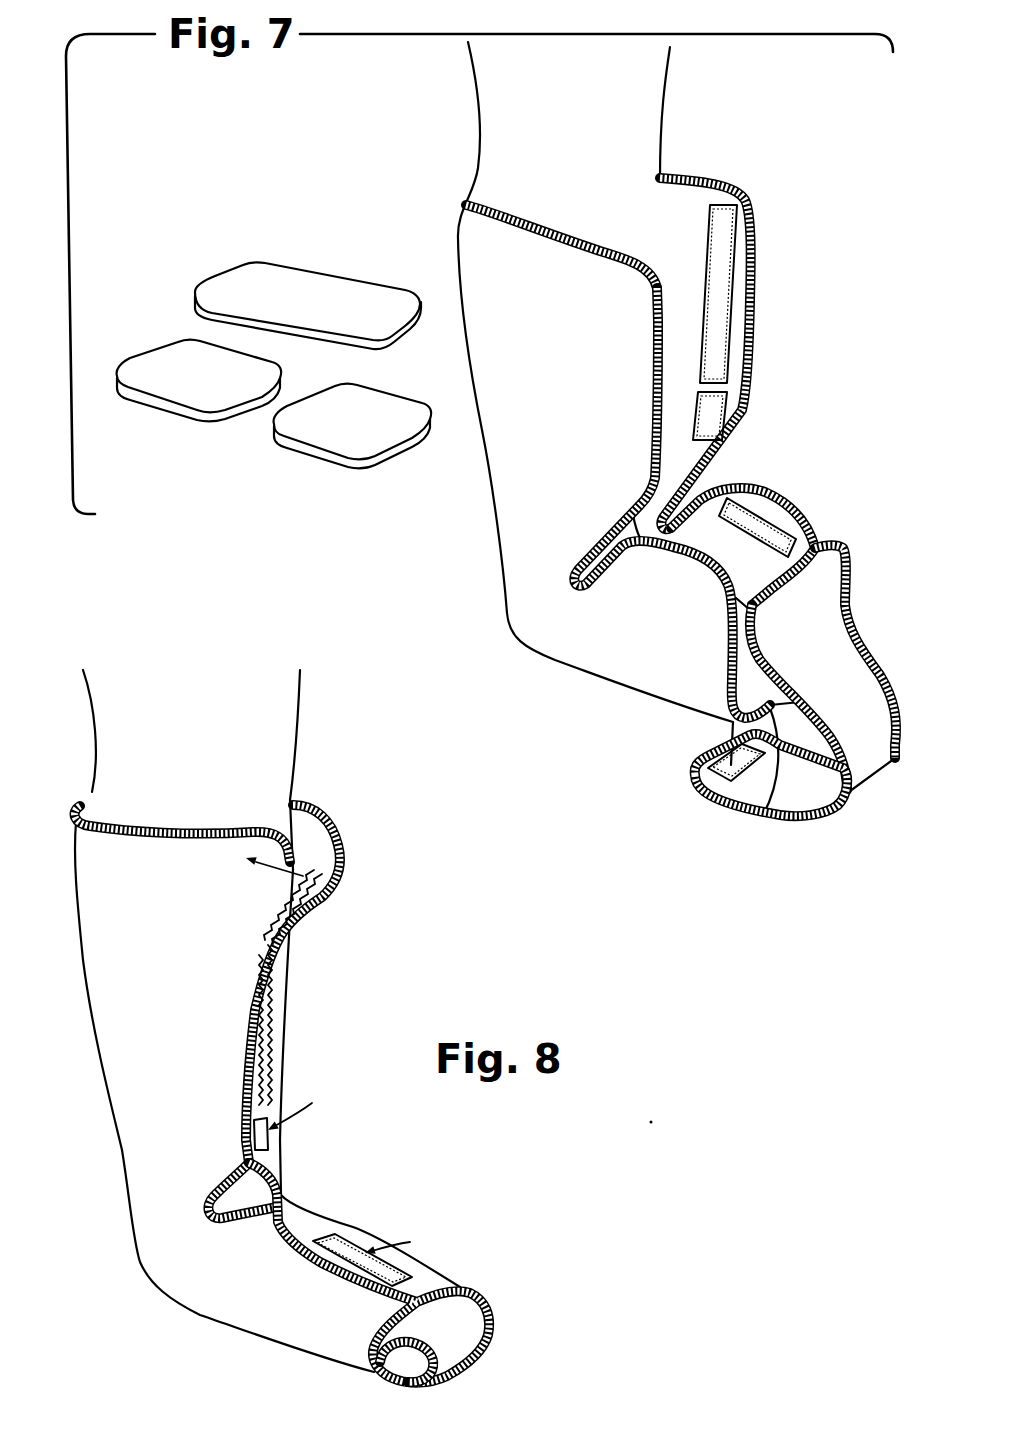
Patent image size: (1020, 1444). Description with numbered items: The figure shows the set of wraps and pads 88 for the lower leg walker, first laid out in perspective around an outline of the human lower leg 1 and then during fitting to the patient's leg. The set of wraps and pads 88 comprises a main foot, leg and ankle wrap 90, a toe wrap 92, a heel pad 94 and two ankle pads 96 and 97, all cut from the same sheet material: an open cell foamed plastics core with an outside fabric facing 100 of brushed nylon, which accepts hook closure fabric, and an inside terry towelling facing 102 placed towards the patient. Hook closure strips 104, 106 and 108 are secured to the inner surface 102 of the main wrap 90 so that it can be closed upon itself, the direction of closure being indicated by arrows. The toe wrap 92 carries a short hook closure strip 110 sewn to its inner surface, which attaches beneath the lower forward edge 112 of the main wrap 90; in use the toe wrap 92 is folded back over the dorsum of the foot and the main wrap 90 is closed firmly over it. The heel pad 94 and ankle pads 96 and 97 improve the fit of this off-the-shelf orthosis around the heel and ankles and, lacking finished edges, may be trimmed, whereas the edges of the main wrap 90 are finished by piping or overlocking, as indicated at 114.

In FIG. 7, the outline of the human lower leg 1 is at (648, 103).
In FIG. 8, the outline of the human lower leg 1 is at (288, 712).
In FIG. 7, the set of wraps and pads 88 is at (311, 238).
In FIG. 7, the main foot, leg and ankle wrap 90 is at (446, 226).
In FIG. 8, the main foot, leg and ankle wrap 90 is at (72, 962).
In FIG. 7, the toe wrap 92 is at (847, 633).
In FIG. 8, the toe wrap 92 is at (475, 1318).
In FIG. 7, the heel pad 94 is at (231, 285).
In FIG. 7, the ankle pad 96 is at (171, 357).
In FIG. 7, the ankle pad 97 is at (310, 425).
In FIG. 7, the fabric facing 100 is at (490, 270).
In FIG. 8, the fabric facing 100 is at (113, 1030).
In FIG. 7, the fabric facing 102 is at (680, 197).
In FIG. 8, the fabric facing 102 is at (308, 843).
In FIG. 7, the hook closure strip 104 is at (722, 283).
In FIG. 8, the hook closure strip 104 is at (312, 870).
In FIG. 7, the hook closure strip 106 is at (714, 418).
In FIG. 7, the hook closure strip 108 is at (757, 520).
In FIG. 7, the hook closure strip 110 is at (715, 760).
In FIG. 7, the lower forward edge 112 is at (775, 798).
In FIG. 8, the lower forward edge 112 is at (388, 1380).
In FIG. 7, the finished edge 114 is at (458, 214).
In FIG. 8, the finished edge 114 is at (300, 805).